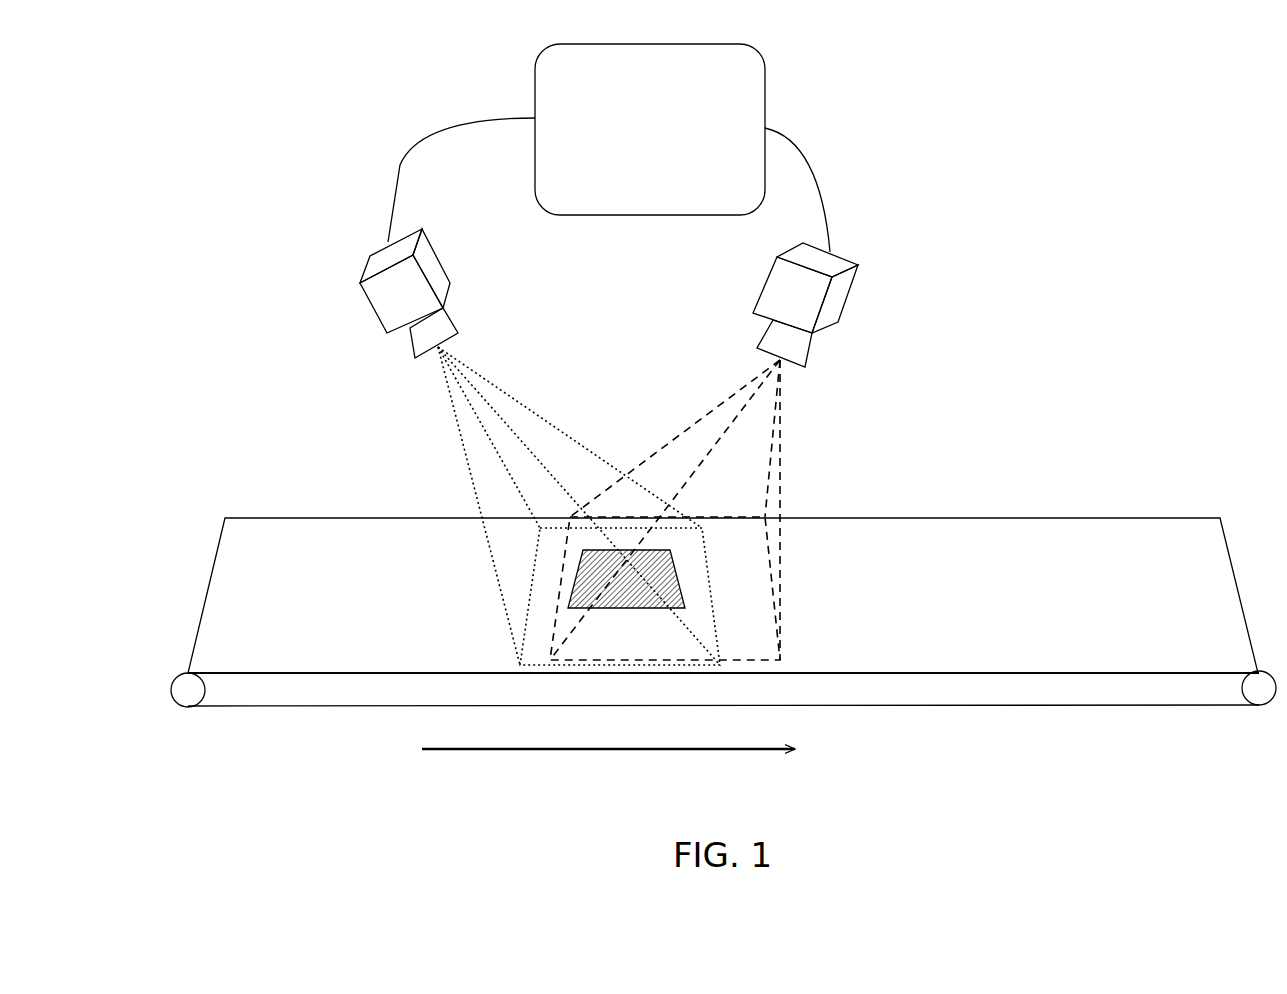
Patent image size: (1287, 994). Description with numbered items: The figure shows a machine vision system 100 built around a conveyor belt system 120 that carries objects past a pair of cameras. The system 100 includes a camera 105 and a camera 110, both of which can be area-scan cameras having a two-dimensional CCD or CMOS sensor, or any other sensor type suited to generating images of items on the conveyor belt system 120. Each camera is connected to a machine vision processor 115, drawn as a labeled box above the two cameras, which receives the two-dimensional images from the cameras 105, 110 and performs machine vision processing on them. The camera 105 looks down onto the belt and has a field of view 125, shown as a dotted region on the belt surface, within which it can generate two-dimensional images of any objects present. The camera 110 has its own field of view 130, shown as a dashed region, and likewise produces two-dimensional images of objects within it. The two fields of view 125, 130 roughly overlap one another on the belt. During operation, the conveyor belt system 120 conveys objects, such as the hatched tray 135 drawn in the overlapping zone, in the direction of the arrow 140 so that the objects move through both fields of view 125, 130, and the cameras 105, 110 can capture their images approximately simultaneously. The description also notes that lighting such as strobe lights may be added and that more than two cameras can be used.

The machine vision system 100 is at (383, 122).
The camera 105 is at (382, 258).
The camera 110 is at (812, 258).
The machine vision processor 115 is at (609, 148).
The conveyor belt system 120 is at (250, 665).
The field of view 125 is at (527, 608).
The field of view 130 is at (777, 612).
The tray 135 is at (607, 610).
The arrow 140 is at (608, 765).